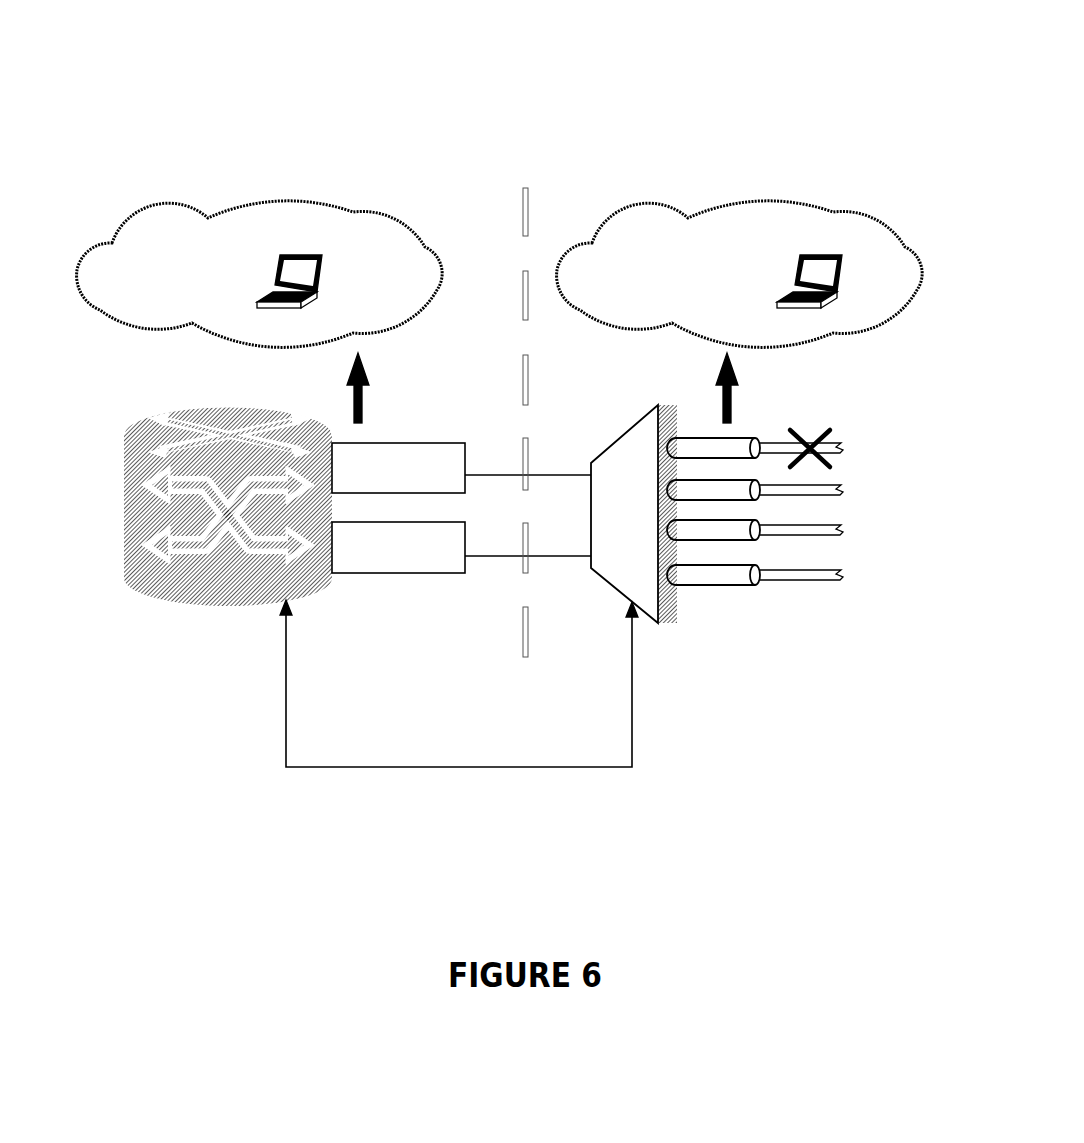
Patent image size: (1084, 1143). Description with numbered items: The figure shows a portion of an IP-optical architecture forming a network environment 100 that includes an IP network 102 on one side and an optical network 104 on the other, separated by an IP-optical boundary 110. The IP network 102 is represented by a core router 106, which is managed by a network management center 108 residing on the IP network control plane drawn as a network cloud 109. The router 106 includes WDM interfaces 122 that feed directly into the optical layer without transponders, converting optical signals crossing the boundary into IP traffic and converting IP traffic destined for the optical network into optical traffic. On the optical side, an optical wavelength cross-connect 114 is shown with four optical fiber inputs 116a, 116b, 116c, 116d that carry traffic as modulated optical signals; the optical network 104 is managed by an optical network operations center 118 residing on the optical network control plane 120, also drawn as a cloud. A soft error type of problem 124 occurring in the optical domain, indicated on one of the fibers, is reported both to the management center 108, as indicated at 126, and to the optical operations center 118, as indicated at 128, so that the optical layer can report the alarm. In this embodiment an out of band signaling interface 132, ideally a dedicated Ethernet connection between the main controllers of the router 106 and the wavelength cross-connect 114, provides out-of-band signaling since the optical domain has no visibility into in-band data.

The network environment 100 is at (612, 95).
The IP network 102 is at (222, 682).
The optical network 104 is at (755, 681).
The core router 106 is at (195, 602).
The network management center (NOC) 108 is at (268, 300).
The network cloud 109 is at (315, 207).
The boundary 110 is at (529, 212).
The optical wavelength cross-connect 114 is at (658, 406).
The optical fiber input 116a is at (840, 447).
The optical fiber input 116b is at (840, 489).
The optical fiber input 116c is at (840, 530).
The optical fiber input 116d is at (840, 572).
The optical network operations center (NOC) 118 is at (783, 300).
The optical network control plane 120 is at (758, 203).
The WDM interface 122 is at (443, 442).
The soft error type of problem 124 is at (807, 440).
The error report to management center 126 is at (361, 393).
The error report to NOC 128 is at (730, 393).
The out of band signaling interface 132 is at (486, 767).